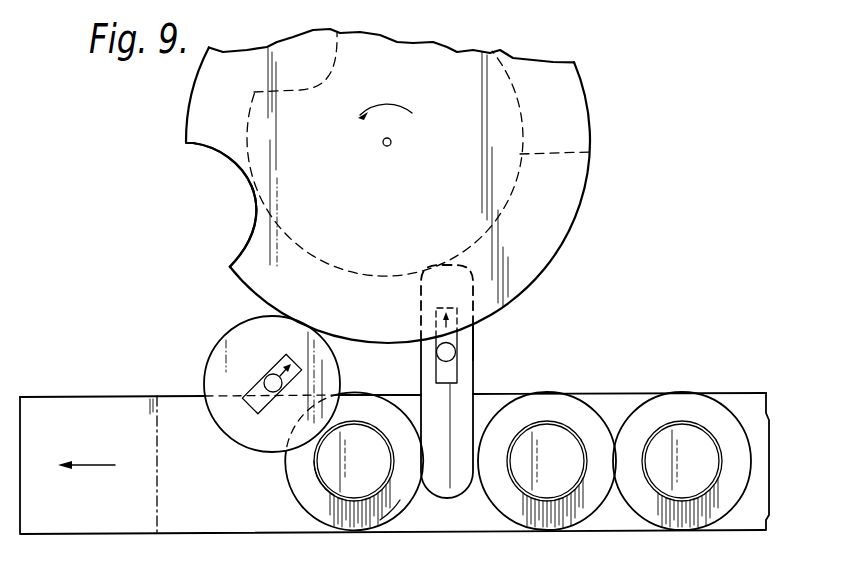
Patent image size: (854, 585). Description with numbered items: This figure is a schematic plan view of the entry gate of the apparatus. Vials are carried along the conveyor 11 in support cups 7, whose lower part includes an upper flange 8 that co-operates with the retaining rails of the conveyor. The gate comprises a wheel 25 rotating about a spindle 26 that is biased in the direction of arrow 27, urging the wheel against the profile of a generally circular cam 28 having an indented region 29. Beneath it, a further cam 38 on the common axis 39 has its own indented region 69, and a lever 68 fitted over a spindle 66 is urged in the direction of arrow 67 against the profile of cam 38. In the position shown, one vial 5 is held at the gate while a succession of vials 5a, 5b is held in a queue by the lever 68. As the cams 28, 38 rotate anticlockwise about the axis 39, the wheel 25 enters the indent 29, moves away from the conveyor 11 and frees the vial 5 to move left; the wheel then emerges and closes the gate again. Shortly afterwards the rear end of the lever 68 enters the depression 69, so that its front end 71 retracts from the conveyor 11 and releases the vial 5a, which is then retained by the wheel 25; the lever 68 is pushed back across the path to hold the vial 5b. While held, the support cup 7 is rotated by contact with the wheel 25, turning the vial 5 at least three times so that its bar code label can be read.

The vial 5 is at (368, 477).
The vial 5a is at (573, 476).
The vial 5b is at (710, 472).
The support cup 7 is at (318, 482).
The upper flange 8 is at (397, 502).
The conveyor 11 is at (620, 410).
The wheel 25 is at (230, 343).
The spindle 26 is at (264, 381).
The arrow 27 is at (292, 369).
The cam 28 is at (562, 225).
The indented region 29 is at (210, 148).
The cam 38 is at (590, 152).
The axis 39 is at (391, 145).
The spindle 66 is at (455, 352).
The arrow 67 is at (457, 332).
The lever 68 is at (474, 367).
The indented region 69 is at (298, 89).
The front end 71 is at (448, 488).